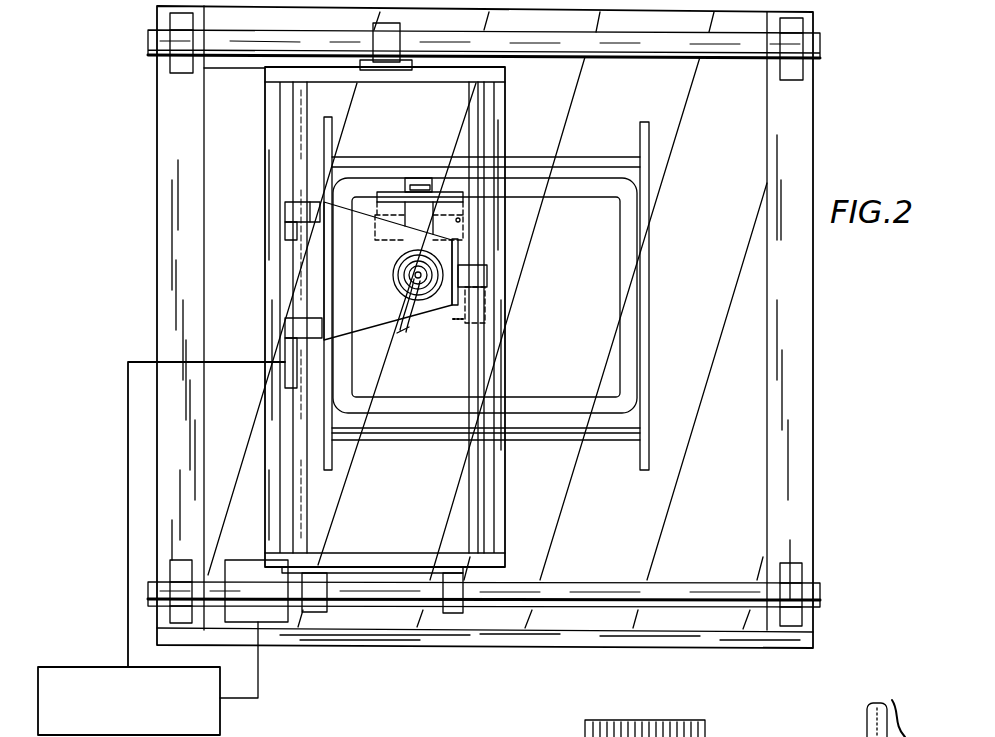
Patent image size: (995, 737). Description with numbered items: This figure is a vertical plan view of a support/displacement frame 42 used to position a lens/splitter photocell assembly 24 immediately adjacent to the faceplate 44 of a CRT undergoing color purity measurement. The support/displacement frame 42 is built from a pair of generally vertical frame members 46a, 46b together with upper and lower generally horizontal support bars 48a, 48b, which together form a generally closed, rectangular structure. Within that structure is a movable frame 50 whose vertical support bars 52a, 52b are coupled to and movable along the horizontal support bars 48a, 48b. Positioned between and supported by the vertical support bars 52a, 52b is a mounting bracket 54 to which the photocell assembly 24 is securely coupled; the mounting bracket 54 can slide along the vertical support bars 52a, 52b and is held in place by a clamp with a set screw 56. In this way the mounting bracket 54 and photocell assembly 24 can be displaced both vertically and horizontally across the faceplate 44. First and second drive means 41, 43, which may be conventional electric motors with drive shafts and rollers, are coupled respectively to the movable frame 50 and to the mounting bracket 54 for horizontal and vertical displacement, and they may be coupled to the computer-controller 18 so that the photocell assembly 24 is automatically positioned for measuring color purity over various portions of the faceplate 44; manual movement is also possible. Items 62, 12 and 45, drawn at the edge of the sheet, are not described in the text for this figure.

The computer-controller 18 is at (98, 650).
The photocell assembly 24 is at (401, 193).
The first drive means 41 is at (256, 558).
The support/displacement frame 42 is at (126, 342).
The second drive means 43 is at (288, 392).
The faceplate 44 is at (580, 262).
The vertical frame member 46a is at (183, 182).
The vertical frame member 46b is at (822, 335).
The upper horizontal support bar 48a is at (703, 58).
The lower horizontal support bar 48b is at (673, 582).
The movable frame 50 is at (507, 470).
The vertical support bar 52a is at (307, 490).
The vertical support bar 52b is at (463, 513).
The mounting bracket 54 is at (374, 278).
The clamp with set screw 56 is at (467, 327).
The comb 62 is at (714, 730).
The applicator 12 is at (902, 705).
The nozzle 45 is at (912, 718).